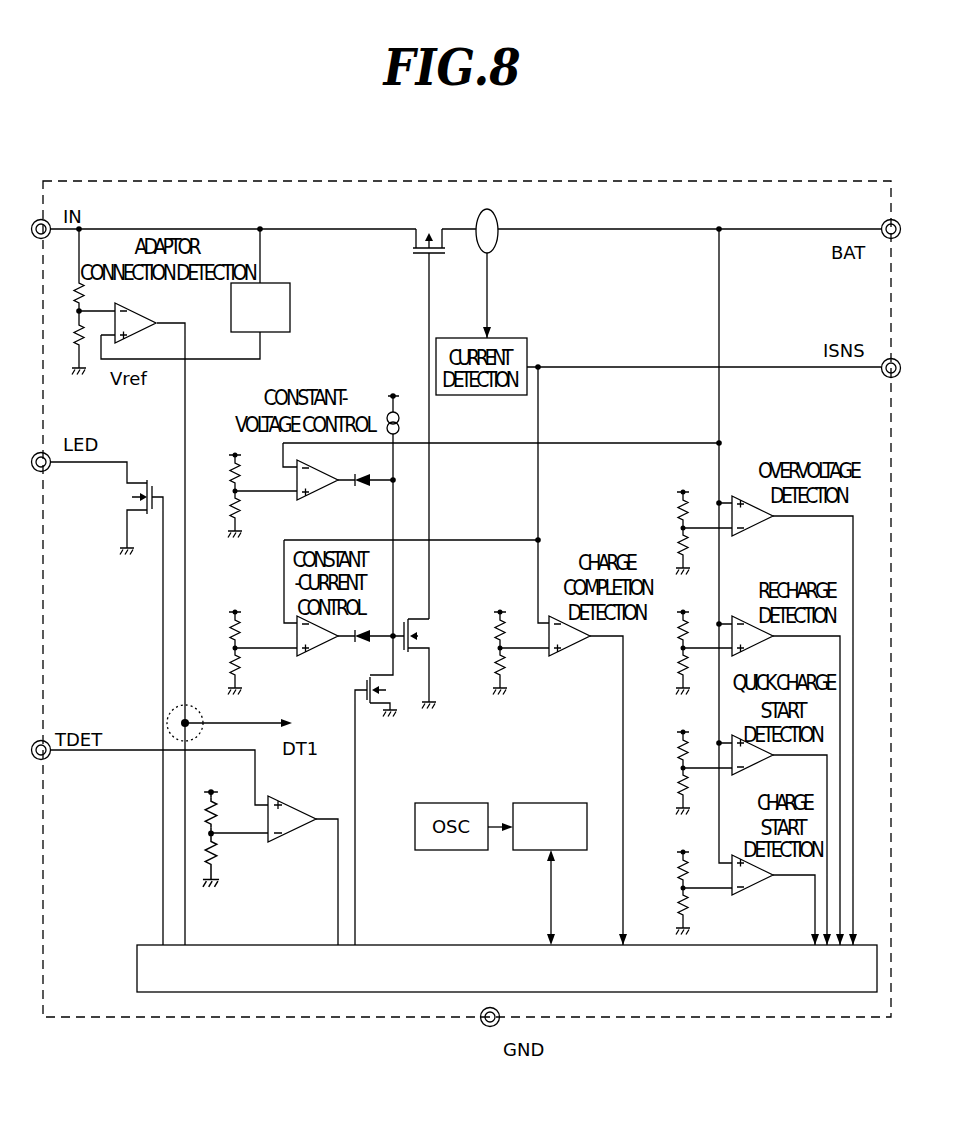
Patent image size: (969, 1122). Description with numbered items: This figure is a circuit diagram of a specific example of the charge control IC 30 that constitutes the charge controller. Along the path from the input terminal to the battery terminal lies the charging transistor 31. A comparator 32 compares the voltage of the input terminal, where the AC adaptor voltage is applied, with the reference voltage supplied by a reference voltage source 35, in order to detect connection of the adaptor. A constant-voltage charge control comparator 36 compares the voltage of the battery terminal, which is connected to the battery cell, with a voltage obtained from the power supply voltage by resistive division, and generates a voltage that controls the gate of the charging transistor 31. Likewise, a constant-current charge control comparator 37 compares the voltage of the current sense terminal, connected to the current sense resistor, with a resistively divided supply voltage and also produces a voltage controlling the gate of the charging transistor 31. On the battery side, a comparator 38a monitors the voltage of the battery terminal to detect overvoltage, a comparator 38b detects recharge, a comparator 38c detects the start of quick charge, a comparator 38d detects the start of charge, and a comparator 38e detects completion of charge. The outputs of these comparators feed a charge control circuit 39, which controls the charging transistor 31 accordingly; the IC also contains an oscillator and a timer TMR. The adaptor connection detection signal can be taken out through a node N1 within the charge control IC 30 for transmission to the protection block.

The charge control IC 30 is at (588, 180).
The charging transistor 31 is at (425, 220).
The comparator 32 is at (140, 308).
The reference voltage source 35 is at (292, 313).
The constant-voltage charge control comparator 36 is at (324, 498).
The constant-current charge control comparator 37 is at (318, 647).
The comparator 38a is at (749, 533).
The comparator 38b is at (752, 652).
The comparator 38c is at (750, 771).
The comparator 38d is at (750, 890).
The comparator 38e is at (568, 650).
The charge control circuit 39 is at (245, 945).
The node N1 is at (173, 712).
The timer TMR is at (548, 803).